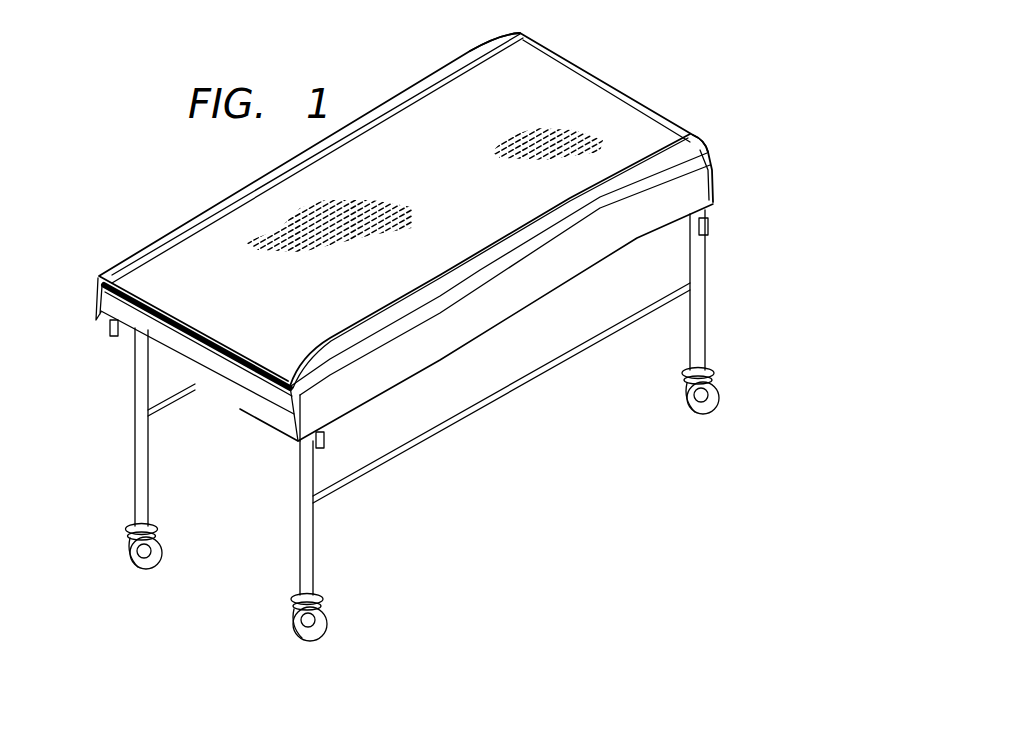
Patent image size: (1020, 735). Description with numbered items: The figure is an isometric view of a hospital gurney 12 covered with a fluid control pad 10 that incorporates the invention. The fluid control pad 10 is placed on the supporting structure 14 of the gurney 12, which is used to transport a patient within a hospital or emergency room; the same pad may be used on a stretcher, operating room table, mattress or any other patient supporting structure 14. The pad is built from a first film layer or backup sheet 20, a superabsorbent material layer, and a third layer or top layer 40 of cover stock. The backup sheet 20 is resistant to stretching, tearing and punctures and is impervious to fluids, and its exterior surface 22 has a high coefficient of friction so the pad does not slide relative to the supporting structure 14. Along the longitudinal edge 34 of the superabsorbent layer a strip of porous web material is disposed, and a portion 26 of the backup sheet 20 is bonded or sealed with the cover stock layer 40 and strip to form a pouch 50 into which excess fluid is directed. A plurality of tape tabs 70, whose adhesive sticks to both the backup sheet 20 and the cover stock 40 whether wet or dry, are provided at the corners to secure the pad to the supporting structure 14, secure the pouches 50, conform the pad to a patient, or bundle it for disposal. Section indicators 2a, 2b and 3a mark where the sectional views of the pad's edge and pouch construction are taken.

The fluid control pad 10 is at (650, 72).
The gurney 12 is at (322, 542).
The supporting structure 14 is at (274, 405).
The backup sheet 20 is at (710, 189).
The exterior surface 22 is at (638, 240).
The portion of backup sheet 26 is at (503, 42).
The longitudinal edge 34 is at (97, 277).
The top layer of cover stock 40 is at (565, 72).
The pouch 50 is at (90, 312).
The tape tab 70 is at (712, 228).
The section line 2a is at (300, 358).
The section line 2b is at (205, 316).
The section line 3a is at (438, 240).